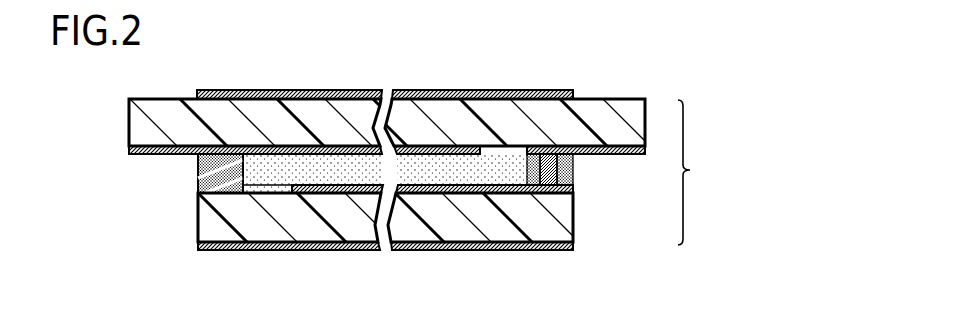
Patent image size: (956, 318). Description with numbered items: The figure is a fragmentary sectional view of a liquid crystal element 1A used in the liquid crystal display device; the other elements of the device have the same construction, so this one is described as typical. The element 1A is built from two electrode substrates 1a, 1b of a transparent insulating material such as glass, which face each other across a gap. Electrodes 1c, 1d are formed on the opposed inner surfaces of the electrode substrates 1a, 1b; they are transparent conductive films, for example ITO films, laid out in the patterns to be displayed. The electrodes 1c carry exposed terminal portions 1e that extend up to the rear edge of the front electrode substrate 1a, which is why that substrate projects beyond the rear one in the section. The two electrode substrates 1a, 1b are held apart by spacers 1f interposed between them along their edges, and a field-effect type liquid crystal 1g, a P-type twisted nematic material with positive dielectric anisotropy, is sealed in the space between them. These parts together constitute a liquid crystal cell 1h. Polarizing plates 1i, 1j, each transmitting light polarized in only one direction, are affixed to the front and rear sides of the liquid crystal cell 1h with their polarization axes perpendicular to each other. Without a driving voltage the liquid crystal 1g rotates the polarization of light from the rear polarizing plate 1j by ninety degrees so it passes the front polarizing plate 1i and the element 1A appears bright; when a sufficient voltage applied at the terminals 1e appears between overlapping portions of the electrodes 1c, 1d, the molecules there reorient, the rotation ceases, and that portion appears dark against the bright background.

The liquid crystal element 1A is at (564, 67).
The front electrode substrate 1a is at (172, 116).
The rear electrode substrate 1b is at (247, 223).
The front electrodes 1c is at (330, 152).
The rear electrodes 1d is at (323, 190).
The exposed terminal portions 1e is at (137, 152).
The spacers 1f is at (212, 179).
The field-effect type liquid crystal 1g is at (498, 172).
The liquid crystal cell 1h is at (701, 172).
The front polarizing plate 1i is at (420, 92).
The rear polarizing plate 1j is at (437, 240).